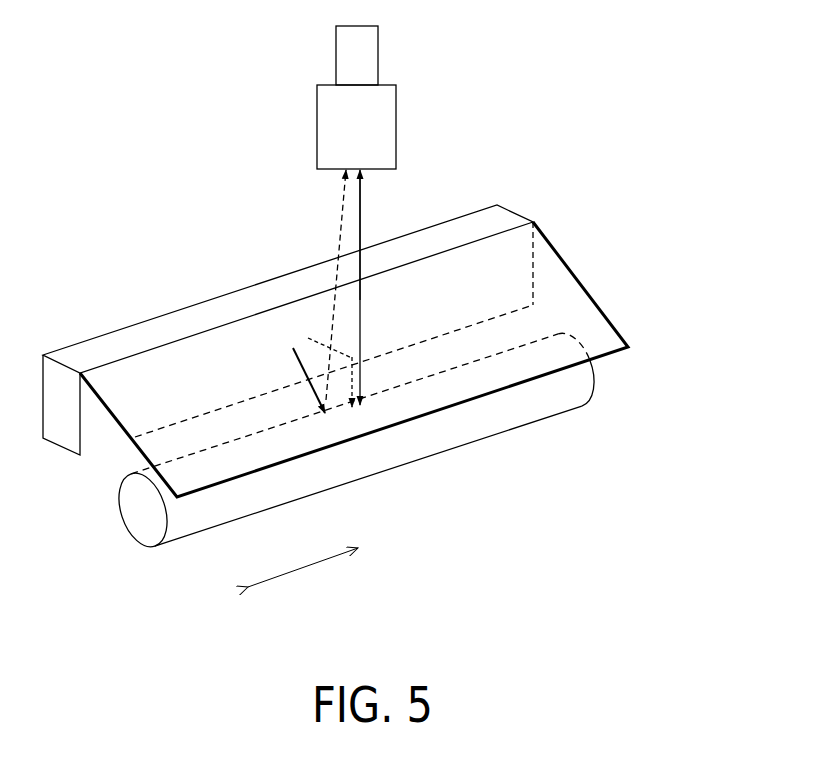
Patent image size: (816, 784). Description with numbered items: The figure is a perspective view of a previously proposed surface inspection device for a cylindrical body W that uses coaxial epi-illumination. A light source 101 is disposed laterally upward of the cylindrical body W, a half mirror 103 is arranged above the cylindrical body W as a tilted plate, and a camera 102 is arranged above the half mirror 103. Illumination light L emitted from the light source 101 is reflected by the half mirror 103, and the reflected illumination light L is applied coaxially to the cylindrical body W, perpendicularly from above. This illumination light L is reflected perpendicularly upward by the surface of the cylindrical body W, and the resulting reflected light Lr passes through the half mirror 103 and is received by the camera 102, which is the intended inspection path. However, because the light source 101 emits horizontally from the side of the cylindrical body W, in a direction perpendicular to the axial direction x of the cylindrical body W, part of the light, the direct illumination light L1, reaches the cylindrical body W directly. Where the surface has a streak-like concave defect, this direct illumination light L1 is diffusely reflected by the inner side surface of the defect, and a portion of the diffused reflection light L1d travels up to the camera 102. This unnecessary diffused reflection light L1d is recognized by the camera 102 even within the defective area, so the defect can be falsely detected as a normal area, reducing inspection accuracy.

The light source 101 is at (65, 427).
The camera 102 is at (377, 119).
The half mirror 103 is at (572, 302).
The cylindrical body W is at (192, 517).
The illumination light L is at (345, 352).
The reflected light Lr is at (362, 212).
The direct illumination light L1 is at (297, 362).
The diffused reflection light L1d is at (342, 236).
The axial direction x is at (303, 558).